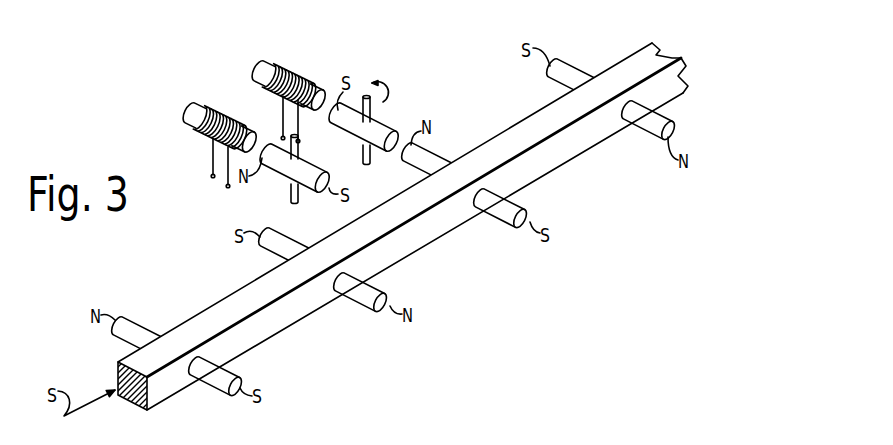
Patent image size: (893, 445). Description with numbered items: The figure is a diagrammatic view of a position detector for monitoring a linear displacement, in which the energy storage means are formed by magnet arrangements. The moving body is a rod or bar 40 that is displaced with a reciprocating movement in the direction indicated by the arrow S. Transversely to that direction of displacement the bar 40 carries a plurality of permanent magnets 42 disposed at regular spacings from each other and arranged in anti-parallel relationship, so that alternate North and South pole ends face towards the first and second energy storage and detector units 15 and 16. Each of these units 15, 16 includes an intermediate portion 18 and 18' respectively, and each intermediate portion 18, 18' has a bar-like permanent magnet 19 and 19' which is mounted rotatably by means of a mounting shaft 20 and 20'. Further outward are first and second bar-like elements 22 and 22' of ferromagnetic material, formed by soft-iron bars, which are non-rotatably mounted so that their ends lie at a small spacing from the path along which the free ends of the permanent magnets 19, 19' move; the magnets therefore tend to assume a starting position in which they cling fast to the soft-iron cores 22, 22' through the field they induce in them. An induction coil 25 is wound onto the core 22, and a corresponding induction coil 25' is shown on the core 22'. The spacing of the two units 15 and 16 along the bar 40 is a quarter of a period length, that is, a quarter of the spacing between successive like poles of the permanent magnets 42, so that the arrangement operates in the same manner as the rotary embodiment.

The energy storage and detector unit 15 is at (206, 148).
The energy storage and detector unit 16 is at (293, 73).
The intermediate portion 18 is at (288, 226).
The intermediate portion 18' is at (379, 105).
The permanent magnet 19 is at (289, 177).
The permanent magnet 19' is at (352, 131).
The mounting shaft 20 is at (271, 149).
The mounting shaft 20' is at (388, 105).
The bar-like element of ferromagnetic material 22 is at (206, 110).
The bar-like element of ferromagnetic material 22' is at (274, 63).
The induction coil 25 is at (203, 135).
The induction coil 25' is at (290, 59).
The bar 40 is at (516, 127).
The permanent magnets 42 is at (568, 66).